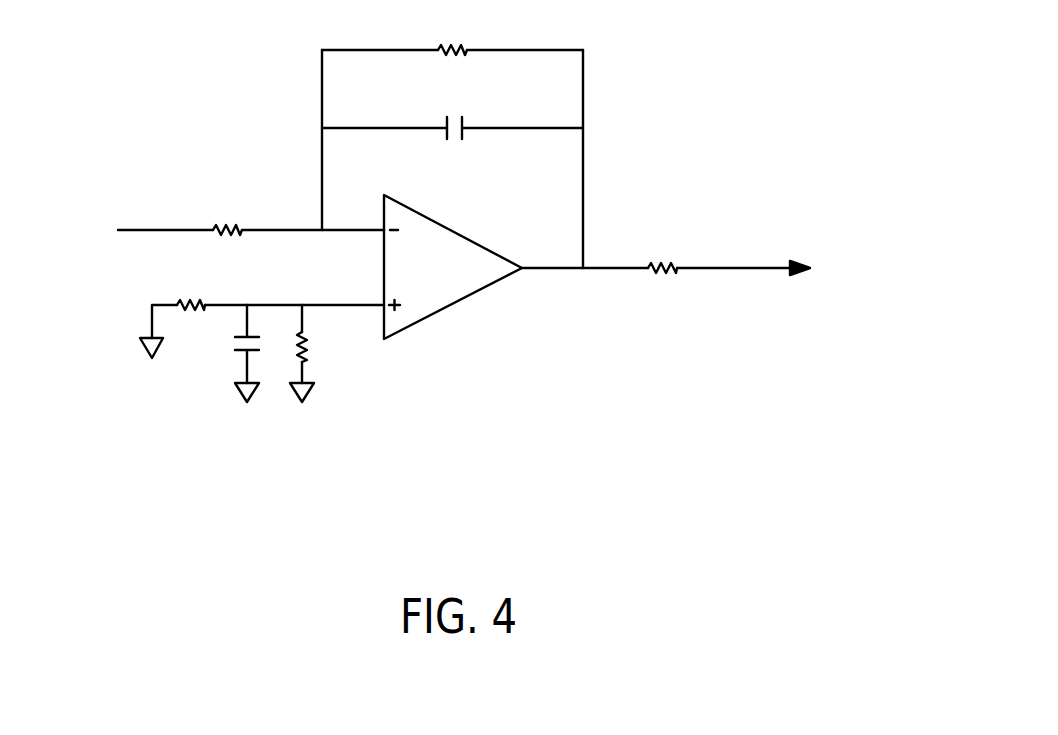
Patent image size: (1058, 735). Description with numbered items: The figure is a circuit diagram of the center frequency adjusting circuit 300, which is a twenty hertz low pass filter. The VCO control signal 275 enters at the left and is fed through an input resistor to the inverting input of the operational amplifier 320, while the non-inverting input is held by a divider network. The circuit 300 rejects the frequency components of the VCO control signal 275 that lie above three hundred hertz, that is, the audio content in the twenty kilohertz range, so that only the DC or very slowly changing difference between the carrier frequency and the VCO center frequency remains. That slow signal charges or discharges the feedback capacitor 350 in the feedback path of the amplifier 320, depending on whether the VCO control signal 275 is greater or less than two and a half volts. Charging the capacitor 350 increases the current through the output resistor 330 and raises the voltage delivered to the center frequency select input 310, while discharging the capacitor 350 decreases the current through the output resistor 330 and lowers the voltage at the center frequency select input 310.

The center frequency adjusting circuit 300 is at (482, 448).
The capacitor C3 350 is at (463, 118).
The operational amplifier 320 is at (448, 311).
The resistor R6 330 is at (673, 270).
The VCO control signal 275 is at (57, 308).
The center frequency select input 310 is at (870, 334).